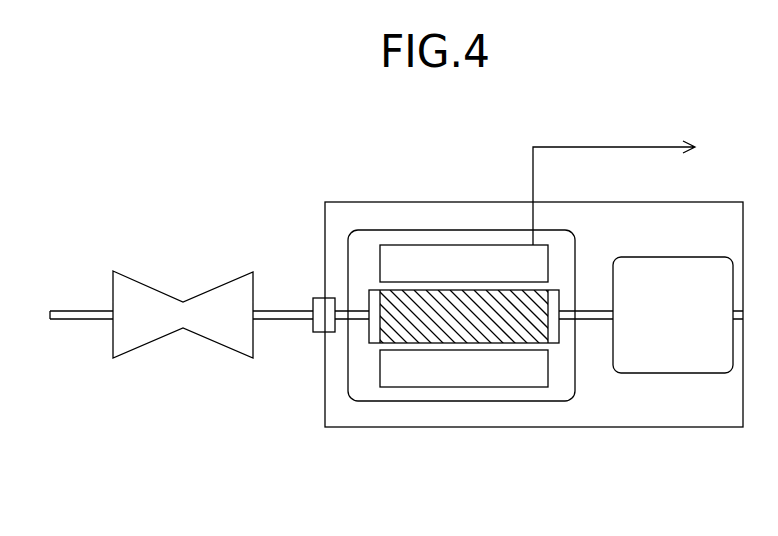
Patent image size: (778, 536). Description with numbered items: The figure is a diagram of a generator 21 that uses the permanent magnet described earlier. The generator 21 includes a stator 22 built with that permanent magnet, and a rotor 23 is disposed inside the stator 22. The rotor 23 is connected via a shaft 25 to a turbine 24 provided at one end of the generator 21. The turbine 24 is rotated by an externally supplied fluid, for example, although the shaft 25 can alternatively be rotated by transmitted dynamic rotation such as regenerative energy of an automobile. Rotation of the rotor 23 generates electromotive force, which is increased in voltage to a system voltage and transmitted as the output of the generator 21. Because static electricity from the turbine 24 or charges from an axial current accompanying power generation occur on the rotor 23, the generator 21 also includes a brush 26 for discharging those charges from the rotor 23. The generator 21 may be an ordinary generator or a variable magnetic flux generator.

The generator 21 is at (370, 200).
The stator 22 is at (433, 377).
The rotor 23 is at (477, 333).
The turbine 24 is at (225, 285).
The shaft 25 is at (288, 322).
The brush 26 is at (663, 360).